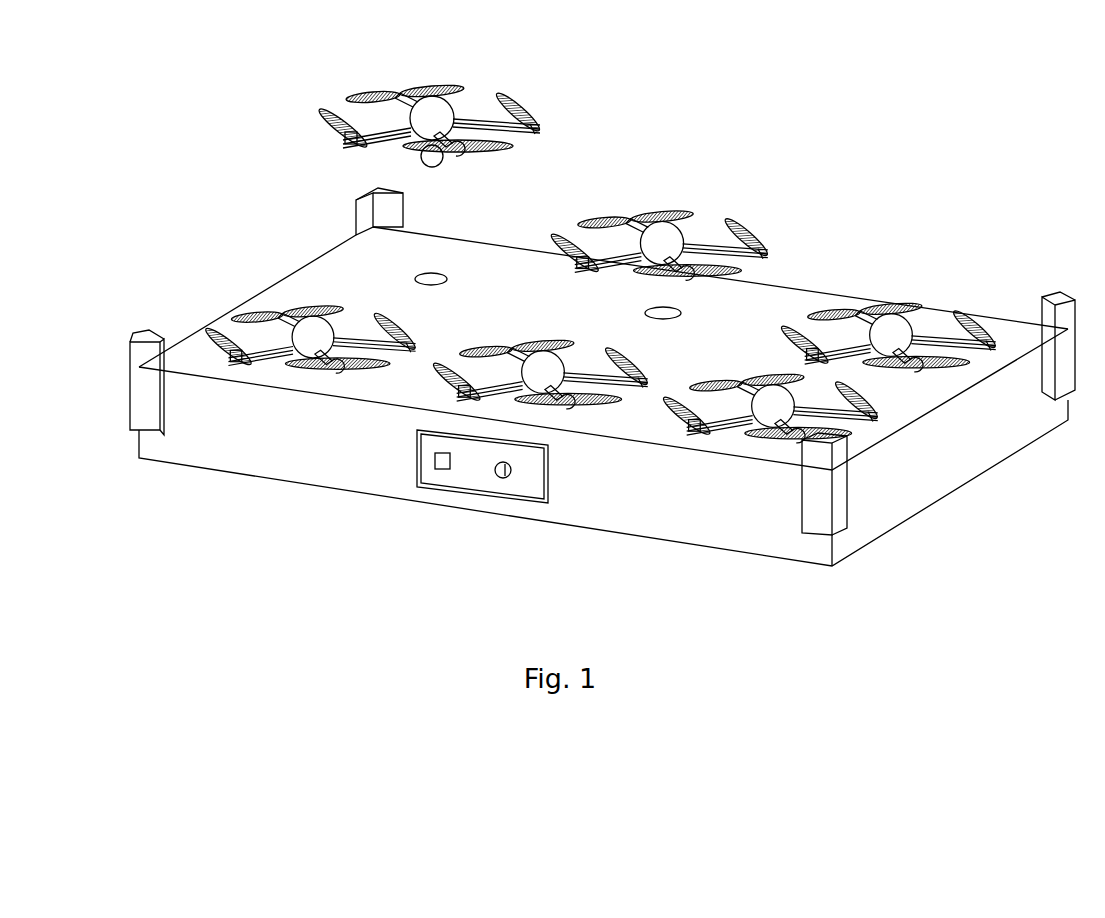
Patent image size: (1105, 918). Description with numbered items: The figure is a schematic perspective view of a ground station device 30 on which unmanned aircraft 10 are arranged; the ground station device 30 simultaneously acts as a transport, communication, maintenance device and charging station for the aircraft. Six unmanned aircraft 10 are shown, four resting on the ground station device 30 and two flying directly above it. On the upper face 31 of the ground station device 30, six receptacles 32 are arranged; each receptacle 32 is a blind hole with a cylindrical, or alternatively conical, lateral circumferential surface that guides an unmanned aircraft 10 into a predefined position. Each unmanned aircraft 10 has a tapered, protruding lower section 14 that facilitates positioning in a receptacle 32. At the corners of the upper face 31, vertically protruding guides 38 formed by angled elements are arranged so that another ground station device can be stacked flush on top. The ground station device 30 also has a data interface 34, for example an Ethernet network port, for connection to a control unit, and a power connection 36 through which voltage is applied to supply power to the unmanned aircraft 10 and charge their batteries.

The unmanned aircraft 10 is at (429, 113).
The lower section 14 is at (437, 162).
The ground station device 30 is at (300, 452).
The upper face 31 is at (740, 315).
The receptacle 32 is at (415, 275).
The data interface 34 is at (440, 472).
The power connection 36 is at (505, 478).
The guide 38 is at (143, 363).